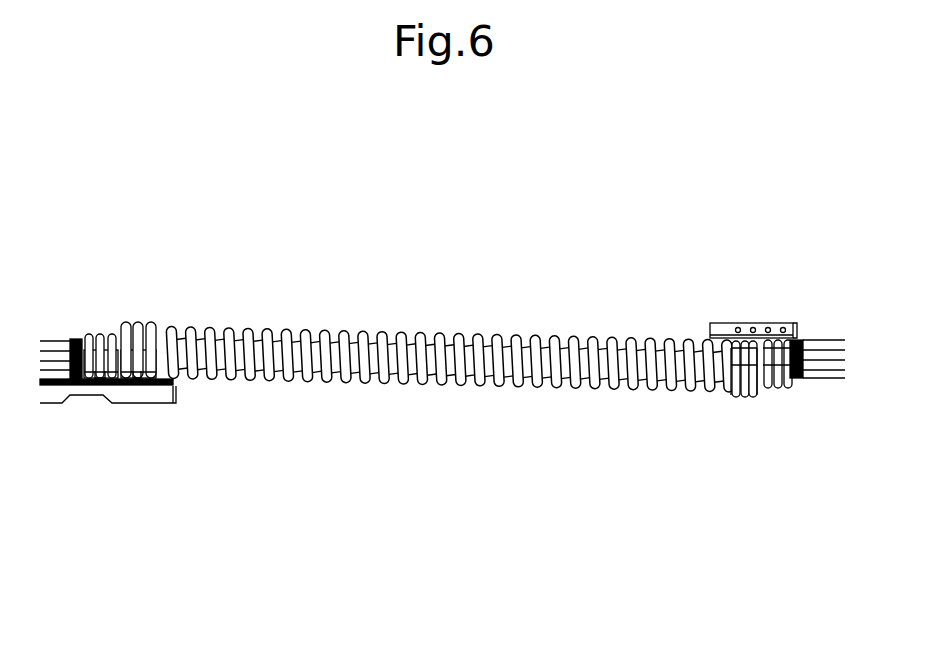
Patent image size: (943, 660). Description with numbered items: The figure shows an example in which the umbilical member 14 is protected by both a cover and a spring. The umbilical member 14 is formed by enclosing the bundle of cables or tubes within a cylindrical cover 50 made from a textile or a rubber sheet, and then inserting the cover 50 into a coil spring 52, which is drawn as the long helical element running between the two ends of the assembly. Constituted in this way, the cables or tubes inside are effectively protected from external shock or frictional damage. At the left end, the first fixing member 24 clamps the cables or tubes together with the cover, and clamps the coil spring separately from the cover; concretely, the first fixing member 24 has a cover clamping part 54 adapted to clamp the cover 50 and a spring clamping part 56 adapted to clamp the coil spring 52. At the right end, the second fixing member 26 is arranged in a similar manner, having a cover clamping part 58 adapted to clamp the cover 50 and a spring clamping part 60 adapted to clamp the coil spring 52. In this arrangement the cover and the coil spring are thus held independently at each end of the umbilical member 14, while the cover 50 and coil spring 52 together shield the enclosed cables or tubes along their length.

The umbilical member 14 is at (410, 488).
The first fixing member 24 is at (103, 172).
The second fixing member 26 is at (757, 533).
The cylindrical cover 50 is at (433, 352).
The coil spring 52 is at (287, 335).
The cover clamping part 54 is at (100, 337).
The spring clamping part 56 is at (138, 333).
The cover clamping part 58 is at (775, 383).
The spring clamping part 60 is at (738, 397).